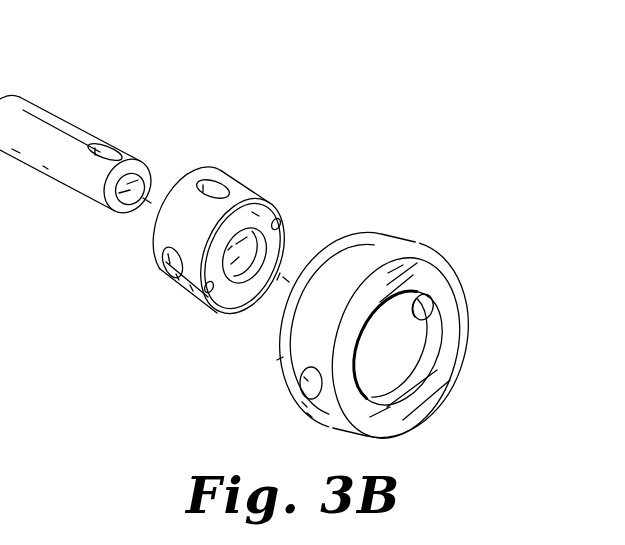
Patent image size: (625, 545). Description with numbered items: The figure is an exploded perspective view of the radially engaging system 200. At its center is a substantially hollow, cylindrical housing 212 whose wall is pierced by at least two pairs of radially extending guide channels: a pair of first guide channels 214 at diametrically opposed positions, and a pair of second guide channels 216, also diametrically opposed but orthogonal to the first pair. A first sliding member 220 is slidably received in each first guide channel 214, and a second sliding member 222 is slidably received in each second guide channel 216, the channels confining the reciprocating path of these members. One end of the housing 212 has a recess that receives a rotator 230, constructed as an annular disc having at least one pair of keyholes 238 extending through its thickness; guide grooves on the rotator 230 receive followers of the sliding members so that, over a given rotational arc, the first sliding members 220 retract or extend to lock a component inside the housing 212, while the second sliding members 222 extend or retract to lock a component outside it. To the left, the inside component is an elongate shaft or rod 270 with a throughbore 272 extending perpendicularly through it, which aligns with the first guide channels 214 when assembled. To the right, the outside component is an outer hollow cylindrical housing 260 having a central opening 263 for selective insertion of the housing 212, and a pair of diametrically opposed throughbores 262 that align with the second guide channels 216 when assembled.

The radially engaging system 200 is at (246, 243).
The cylindrical housing 212 is at (192, 220).
The first guide channels 214 is at (200, 165).
The second guide channels 216 is at (146, 245).
The first sliding member 220 is at (218, 178).
The second sliding member 222 is at (160, 265).
The rotator 230 is at (238, 315).
The keyholes 238 is at (294, 237).
The outer hollow cylindrical housing 260 is at (355, 323).
The throughbores 262 is at (406, 338).
The central opening 263 is at (392, 380).
The elongate shaft or rod 270 is at (80, 125).
The throughbore 272 is at (111, 140).